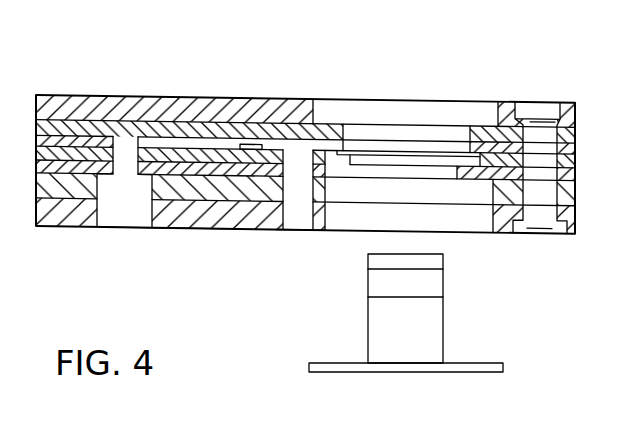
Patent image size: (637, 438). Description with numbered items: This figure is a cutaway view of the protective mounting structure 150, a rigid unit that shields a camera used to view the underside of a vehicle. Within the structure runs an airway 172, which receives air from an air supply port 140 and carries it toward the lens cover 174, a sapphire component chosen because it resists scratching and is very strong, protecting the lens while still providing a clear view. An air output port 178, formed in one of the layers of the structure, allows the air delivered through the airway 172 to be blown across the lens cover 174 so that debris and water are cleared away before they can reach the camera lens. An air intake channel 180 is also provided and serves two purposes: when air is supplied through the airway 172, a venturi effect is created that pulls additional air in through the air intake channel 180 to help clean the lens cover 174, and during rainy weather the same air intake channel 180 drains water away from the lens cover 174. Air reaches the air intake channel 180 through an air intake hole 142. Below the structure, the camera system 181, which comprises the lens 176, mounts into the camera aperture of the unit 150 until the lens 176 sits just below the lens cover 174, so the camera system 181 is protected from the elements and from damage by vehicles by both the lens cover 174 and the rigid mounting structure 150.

The protective mounting structure 150 is at (92, 95).
The airway 172 is at (112, 228).
The air intake channel 180 is at (300, 230).
The air output port 178 is at (343, 146).
The lens cover 174 is at (448, 150).
The air intake hole 142 is at (290, 236).
The air supply port 140 is at (140, 231).
The lens 176 is at (440, 251).
The camera system 181 is at (368, 337).